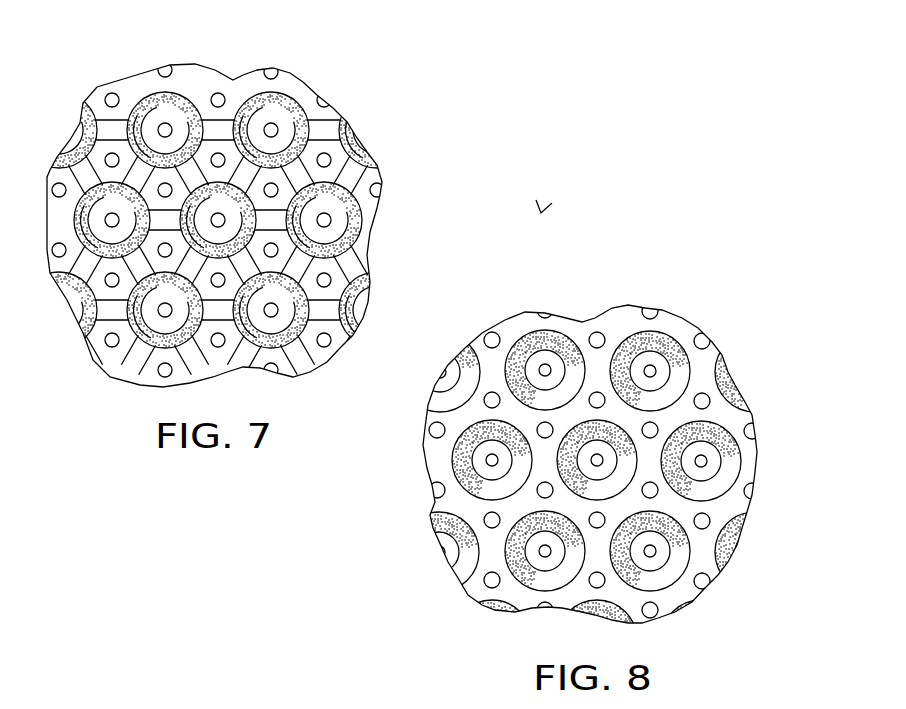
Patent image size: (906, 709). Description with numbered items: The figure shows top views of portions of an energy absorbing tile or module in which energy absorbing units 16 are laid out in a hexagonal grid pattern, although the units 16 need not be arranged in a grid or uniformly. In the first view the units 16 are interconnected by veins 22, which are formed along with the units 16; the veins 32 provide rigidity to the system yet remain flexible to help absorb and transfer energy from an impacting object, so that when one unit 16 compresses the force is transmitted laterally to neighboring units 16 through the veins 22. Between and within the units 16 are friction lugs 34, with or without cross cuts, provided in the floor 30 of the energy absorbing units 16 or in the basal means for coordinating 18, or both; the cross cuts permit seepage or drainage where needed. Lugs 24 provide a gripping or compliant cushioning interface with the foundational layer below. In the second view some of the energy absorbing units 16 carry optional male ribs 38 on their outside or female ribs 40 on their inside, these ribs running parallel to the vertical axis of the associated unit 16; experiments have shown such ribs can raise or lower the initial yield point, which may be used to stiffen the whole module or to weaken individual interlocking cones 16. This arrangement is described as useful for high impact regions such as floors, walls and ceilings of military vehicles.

In FIG. 7, the energy absorbing unit 16 is at (259, 233).
In FIG. 8, the energy absorbing unit 16 is at (578, 466).
In FIG. 7, the basal means for coordinating 18 is at (236, 372).
In FIG. 8, the basal means for coordinating 18 is at (728, 505).
In FIG. 7, the veins 22 is at (234, 74).
In FIG. 7, the lugs 24 is at (332, 282).
In FIG. 8, the lugs 24 is at (711, 401).
In FIG. 8, the floor 30 is at (543, 563).
In FIG. 7, the veins 32 is at (323, 124).
In FIG. 7, the friction lugs 34 is at (371, 189).
In FIG. 8, the friction lugs 34 is at (654, 369).
In FIG. 8, the male ribs 38 is at (573, 323).
In FIG. 8, the female ribs 40 is at (676, 578).